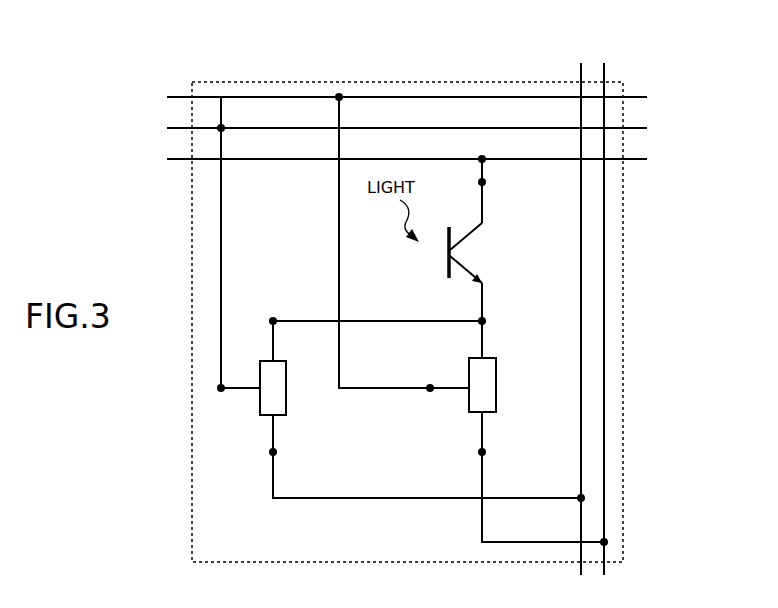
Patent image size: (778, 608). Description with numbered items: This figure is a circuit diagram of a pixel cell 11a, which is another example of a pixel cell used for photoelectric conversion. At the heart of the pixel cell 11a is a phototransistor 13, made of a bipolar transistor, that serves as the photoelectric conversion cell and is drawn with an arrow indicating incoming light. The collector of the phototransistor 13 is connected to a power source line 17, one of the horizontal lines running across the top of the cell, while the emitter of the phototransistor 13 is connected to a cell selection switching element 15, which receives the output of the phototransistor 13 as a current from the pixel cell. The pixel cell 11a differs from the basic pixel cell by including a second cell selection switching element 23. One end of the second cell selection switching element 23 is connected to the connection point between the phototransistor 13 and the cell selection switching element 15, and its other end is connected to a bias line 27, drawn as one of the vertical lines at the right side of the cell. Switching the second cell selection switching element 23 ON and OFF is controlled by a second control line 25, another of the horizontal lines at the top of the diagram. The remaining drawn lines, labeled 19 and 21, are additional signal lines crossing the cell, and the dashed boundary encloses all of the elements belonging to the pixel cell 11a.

The pixel cell 11a is at (520, 82).
The phototransistor 13 is at (468, 252).
The cell selection switching element 15 is at (498, 383).
The power source line 17 is at (281, 162).
The power supply line 19 is at (368, 95).
The signal line 21 is at (606, 352).
The second cell selection switching element 23 is at (288, 400).
The second control line 25 is at (290, 127).
The bias line 27 is at (583, 404).